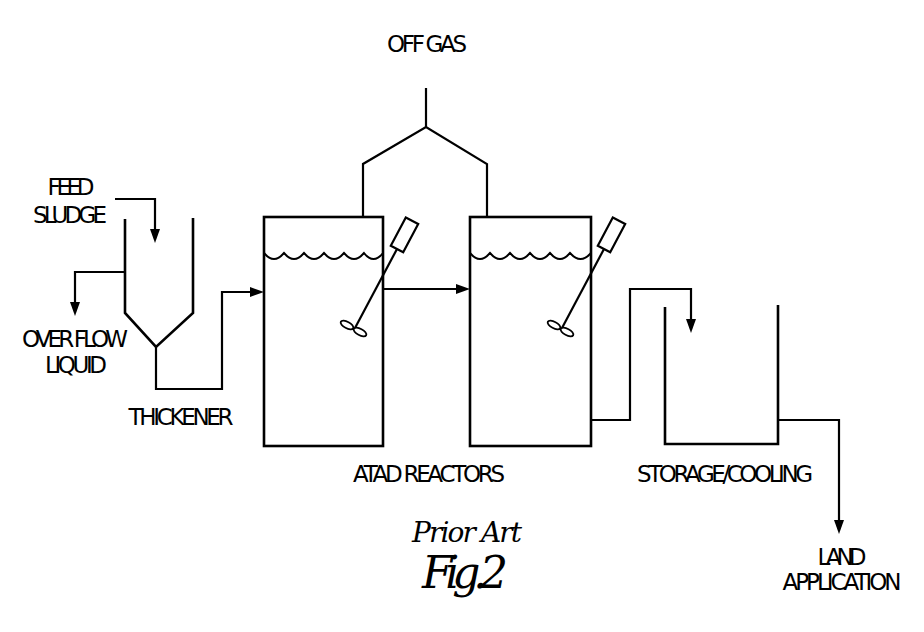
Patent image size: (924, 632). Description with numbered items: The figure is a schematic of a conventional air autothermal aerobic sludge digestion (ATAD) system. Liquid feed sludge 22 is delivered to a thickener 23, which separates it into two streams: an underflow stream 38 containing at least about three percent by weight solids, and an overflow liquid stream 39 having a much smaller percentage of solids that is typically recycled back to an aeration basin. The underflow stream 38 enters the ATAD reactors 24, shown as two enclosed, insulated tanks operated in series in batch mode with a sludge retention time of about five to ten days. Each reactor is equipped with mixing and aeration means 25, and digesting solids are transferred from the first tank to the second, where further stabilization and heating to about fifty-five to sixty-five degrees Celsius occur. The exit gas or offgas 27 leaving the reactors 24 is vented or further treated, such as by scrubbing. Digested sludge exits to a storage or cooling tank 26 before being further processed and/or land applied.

The liquid feed sludge 22 is at (137, 207).
The thickener 23 is at (159, 282).
The ATAD reactors 24 is at (427, 331).
The mixing and aeration means 25 is at (481, 278).
The storage or cooling tank 26 is at (721, 374).
The exit gas (offgas) 27 is at (425, 136).
The underflow stream 38 is at (210, 322).
The overflow liquid stream 39 is at (97, 279).